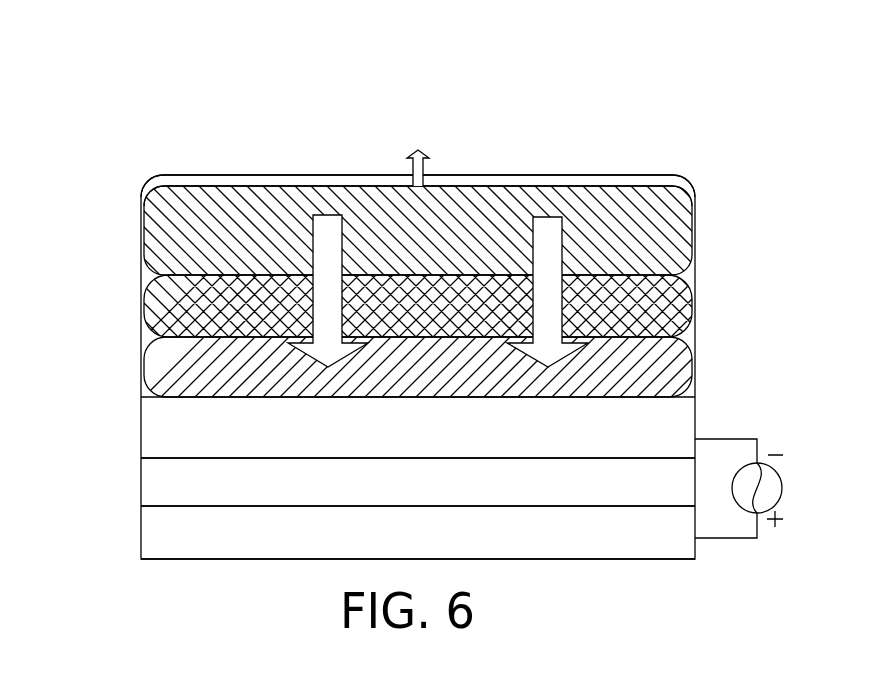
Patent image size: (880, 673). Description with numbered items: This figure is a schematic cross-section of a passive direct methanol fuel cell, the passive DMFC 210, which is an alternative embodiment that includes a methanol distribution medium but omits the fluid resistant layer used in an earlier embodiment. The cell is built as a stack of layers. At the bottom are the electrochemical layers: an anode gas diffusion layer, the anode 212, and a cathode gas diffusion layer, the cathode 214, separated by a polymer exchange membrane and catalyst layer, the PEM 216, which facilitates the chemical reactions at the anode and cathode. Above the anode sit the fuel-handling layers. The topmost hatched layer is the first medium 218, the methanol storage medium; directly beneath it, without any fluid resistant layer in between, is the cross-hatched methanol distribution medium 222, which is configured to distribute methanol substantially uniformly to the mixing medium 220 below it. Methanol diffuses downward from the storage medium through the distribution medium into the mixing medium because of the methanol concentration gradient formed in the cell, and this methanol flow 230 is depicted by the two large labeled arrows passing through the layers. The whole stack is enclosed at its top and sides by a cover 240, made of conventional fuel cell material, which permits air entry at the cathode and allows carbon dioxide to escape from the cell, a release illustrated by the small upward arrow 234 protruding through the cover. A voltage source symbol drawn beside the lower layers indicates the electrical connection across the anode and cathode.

The passive DMFC 210 is at (127, 111).
The anode 212 is at (162, 423).
The cathode 214 is at (160, 531).
The PEM 216 is at (162, 482).
The first medium 218 is at (158, 232).
The mixing medium 220 is at (158, 365).
The methanol distribution medium 222 is at (158, 305).
The methanol flow 230 is at (545, 217).
The arrow 234 is at (410, 167).
The cover 240 is at (195, 175).